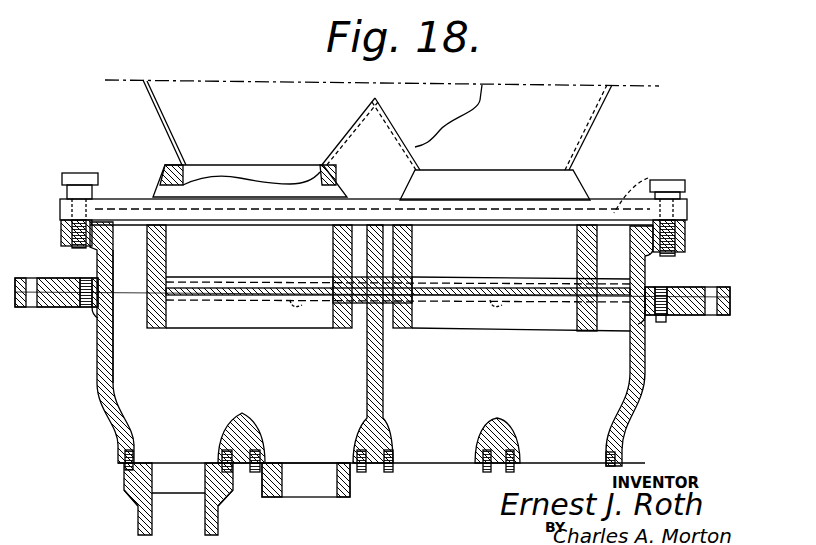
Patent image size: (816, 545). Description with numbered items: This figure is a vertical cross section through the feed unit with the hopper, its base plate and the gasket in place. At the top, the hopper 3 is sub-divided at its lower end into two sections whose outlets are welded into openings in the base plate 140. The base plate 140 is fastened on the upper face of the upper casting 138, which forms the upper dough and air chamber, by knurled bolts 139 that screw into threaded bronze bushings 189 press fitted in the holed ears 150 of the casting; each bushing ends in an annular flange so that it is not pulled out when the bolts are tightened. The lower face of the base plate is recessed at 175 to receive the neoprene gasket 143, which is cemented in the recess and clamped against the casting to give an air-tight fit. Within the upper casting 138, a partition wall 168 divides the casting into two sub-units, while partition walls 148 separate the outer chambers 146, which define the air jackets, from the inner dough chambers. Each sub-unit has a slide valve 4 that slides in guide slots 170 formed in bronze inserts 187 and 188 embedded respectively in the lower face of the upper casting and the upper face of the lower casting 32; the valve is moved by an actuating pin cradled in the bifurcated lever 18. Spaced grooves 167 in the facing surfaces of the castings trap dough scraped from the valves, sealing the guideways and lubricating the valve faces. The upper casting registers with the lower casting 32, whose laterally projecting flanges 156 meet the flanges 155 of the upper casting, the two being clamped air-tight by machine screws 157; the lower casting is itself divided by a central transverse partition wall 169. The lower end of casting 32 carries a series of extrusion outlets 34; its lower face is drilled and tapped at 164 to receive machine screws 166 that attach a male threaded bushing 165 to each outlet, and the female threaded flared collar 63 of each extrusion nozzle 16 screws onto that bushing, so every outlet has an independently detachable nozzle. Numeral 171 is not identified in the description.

The hopper 3 is at (148, 103).
The gasket 143 is at (138, 226).
The base plate 140 is at (62, 182).
The knurled bolts 139 is at (86, 173).
The recess 175 is at (648, 186).
The upper casting 138 is at (78, 245).
The bifurcated lever 18 is at (68, 222).
The holed ears 150 is at (686, 232).
The threaded bronze bushings 189 is at (686, 252).
The lower casting 32 is at (98, 389).
The inner wall surface 171 is at (132, 275).
The partition walls 148 is at (100, 264).
The outer chambers 146 is at (105, 311).
The guide slots 170 is at (163, 258).
The slide valve 4 is at (256, 291).
The bronze insert 188 is at (243, 291).
The partition wall 168 is at (372, 243).
The central transverse partition wall 169 is at (372, 367).
The bronze insert 187 is at (540, 286).
The grooves 167 is at (300, 291).
The machine screws 157 is at (650, 338).
The flanges 155 is at (676, 286).
The flanges 156 is at (692, 313).
The extrusion outlets 34 is at (182, 457).
The flared collar 63 is at (137, 487).
The extrusion nozzle 16 is at (167, 523).
The machine screws 166 is at (125, 458).
The tapped holes 164 is at (485, 463).
The male threaded bushing 165 is at (295, 487).